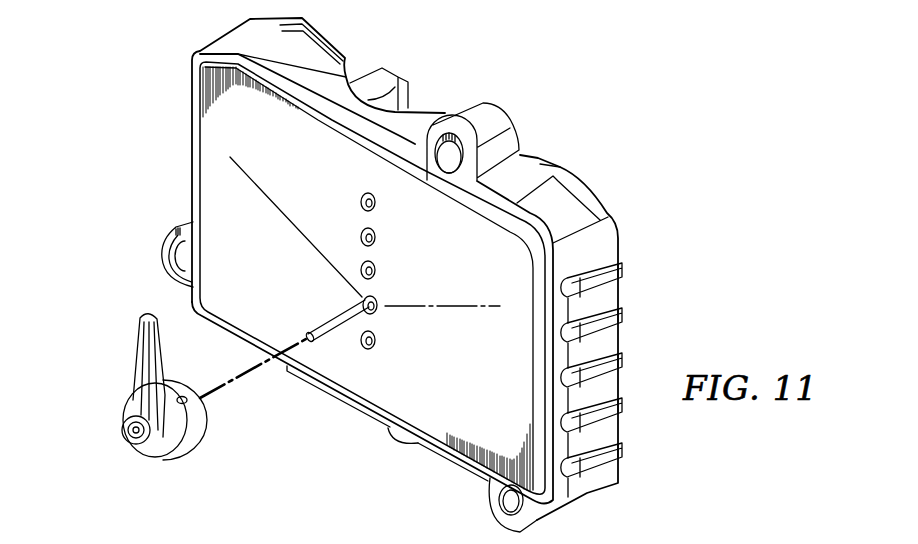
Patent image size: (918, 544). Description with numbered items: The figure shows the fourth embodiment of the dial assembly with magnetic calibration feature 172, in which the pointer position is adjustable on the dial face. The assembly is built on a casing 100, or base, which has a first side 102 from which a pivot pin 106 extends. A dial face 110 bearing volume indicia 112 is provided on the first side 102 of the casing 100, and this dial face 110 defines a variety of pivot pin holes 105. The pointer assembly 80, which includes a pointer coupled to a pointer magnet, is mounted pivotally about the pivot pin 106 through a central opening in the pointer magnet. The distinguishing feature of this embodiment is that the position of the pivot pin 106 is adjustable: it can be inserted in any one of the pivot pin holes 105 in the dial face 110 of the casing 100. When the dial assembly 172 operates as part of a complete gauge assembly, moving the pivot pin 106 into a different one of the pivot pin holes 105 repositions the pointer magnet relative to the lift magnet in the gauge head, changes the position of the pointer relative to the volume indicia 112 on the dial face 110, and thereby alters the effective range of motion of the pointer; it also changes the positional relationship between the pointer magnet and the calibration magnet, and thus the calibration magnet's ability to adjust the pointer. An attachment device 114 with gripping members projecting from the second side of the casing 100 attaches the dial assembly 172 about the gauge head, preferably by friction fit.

The pointer assembly 80 is at (132, 366).
The casing 100 is at (553, 158).
The first side 102 is at (492, 402).
The pivot pin holes 105 is at (360, 236).
The pivot pin 106 is at (334, 330).
The dial face 110 is at (381, 389).
The volume indicia 112 is at (452, 282).
The attachment device 114 is at (378, 76).
The dial assembly with magnetic calibration feature 172 is at (462, 75).